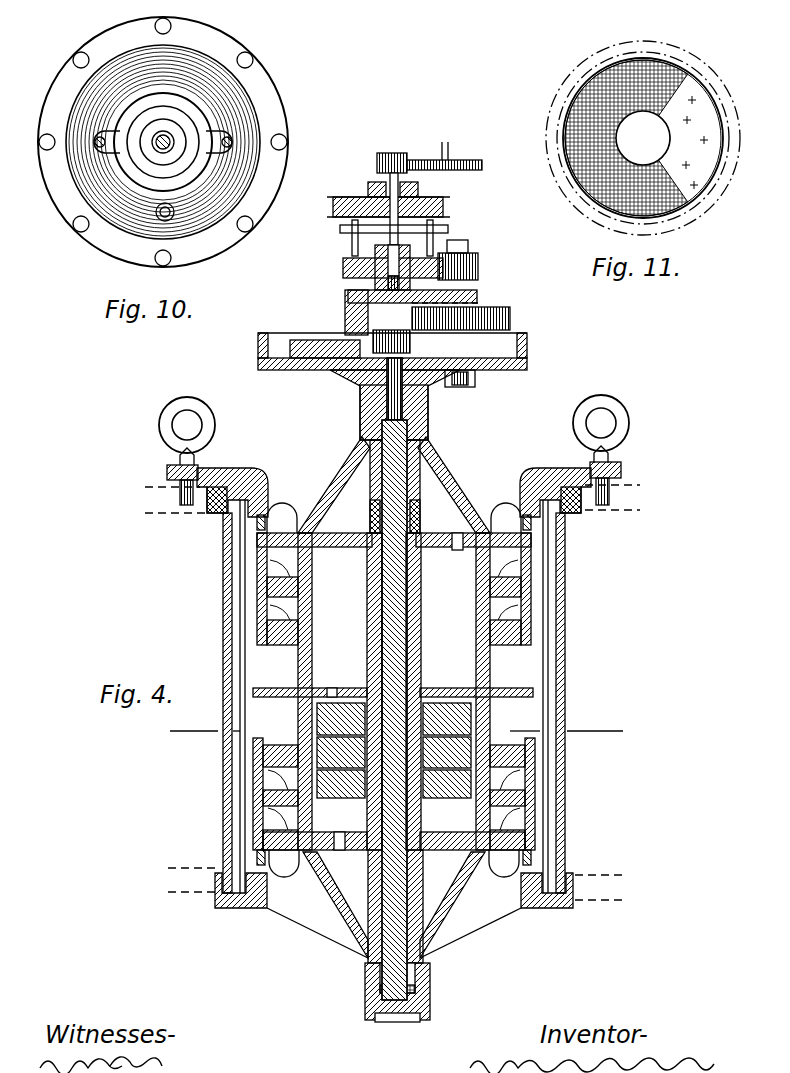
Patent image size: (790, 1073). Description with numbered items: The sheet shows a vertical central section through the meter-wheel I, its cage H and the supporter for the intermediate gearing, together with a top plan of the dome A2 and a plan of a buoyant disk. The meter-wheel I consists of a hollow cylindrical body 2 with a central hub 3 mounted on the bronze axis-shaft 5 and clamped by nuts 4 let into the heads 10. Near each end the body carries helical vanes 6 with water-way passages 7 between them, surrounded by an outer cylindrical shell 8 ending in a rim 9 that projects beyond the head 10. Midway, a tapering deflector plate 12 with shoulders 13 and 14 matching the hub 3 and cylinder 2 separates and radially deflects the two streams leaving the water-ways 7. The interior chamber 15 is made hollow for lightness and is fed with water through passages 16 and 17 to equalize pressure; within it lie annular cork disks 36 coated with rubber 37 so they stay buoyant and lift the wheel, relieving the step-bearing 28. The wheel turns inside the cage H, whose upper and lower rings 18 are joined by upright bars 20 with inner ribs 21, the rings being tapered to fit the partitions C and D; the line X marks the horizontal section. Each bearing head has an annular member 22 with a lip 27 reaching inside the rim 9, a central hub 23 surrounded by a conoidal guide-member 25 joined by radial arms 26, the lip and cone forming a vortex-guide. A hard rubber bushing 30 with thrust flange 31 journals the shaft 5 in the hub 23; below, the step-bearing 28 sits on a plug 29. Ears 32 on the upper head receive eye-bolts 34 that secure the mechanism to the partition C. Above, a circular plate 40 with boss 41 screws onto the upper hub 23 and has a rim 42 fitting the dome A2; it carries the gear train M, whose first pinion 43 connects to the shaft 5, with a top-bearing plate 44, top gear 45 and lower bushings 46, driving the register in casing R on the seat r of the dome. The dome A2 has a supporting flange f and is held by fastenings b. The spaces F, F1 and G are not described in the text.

In FIG. 4, the hollow cylindrical body 2 is at (300, 610).
In FIG. 4, the central hub 3 is at (372, 660).
In FIG. 4, the nuts 4 is at (425, 560).
In FIG. 4, the axis-shaft 5 is at (374, 600).
In FIG. 4, the helical vanes 6 is at (262, 548).
In FIG. 4, the water-way passages 7 is at (285, 612).
In FIG. 4, the outer cylindrical shell 8 is at (532, 576).
In FIG. 4, the cylindrical rim 9 is at (532, 522).
In FIG. 4, the head 10 is at (394, 705).
In FIG. 4, the deflector plate 12 is at (250, 690).
In FIG. 4, the cavity or shoulder 13 is at (426, 665).
In FIG. 4, the cavity or shoulder 14 is at (469, 665).
In FIG. 4, the interior chamber 15 is at (448, 692).
In FIG. 4, the passage 16 is at (457, 548).
In FIG. 4, the passage 17 is at (333, 688).
In FIG. 4, the cage rings 18 is at (212, 505).
In FIG. 4, the upright bars 20 is at (223, 764).
In FIG. 4, the projecting rib 21 is at (550, 663).
In FIG. 4, the annular member 22 is at (250, 468).
In FIG. 4, the bearing hub 23 is at (366, 418).
In FIG. 4, the conoidal guide-member 25 is at (460, 498).
In FIG. 4, the radial arms 26 is at (313, 466).
In FIG. 4, the lip 27 is at (274, 518).
In FIG. 4, the step-bearing 28 is at (416, 978).
In FIG. 4, the supporting plug 29 is at (405, 1022).
In FIG. 4, the tubular bushing 30 is at (418, 499).
In FIG. 4, the flange 31 is at (418, 528).
In FIG. 4, the ears 32 is at (167, 470).
In FIG. 4, the eye-bolts 34 is at (158, 425).
In FIG. 11, the cork disks 36 is at (665, 142).
In FIG. 4, the cork disks 36 is at (394, 750).
In FIG. 11, the surface coating 37 is at (583, 90).
In FIG. 4, the circular plate 40 is at (498, 372).
In FIG. 4, the threaded central boss 41 is at (372, 393).
In FIG. 4, the peripheral rim 42 is at (527, 345).
In FIG. 4, the first gear or pinion 43 is at (441, 328).
In FIG. 4, the plate for the top-bearings 44 is at (480, 297).
In FIG. 4, the top gear 45 is at (343, 270).
In FIG. 4, the hard rubber bushings 46 is at (462, 387).
In FIG. 4, the registering mechanism casing R is at (429, 147).
In FIG. 10, the dome A2 is at (240, 95).
In FIG. 4, the dome A2 is at (450, 206).
In FIG. 4, the intermediate gear train M is at (480, 268).
In FIG. 4, the chamber F is at (261, 410).
In FIG. 4, the chamber F1 is at (249, 955).
In FIG. 4, the partition C is at (404, 499).
In FIG. 4, the partition D is at (408, 885).
In FIG. 4, the section line X is at (398, 732).
In FIG. 4, the supporting cage H is at (172, 625).
In FIG. 4, the meter-wheel I is at (345, 628).
In FIG. 4, the chamber G is at (627, 690).
In FIG. 10, the fastenings b is at (78, 56).
In FIG. 10, the annular supporting flange f is at (258, 78).
In FIG. 10, the seat r is at (163, 142).